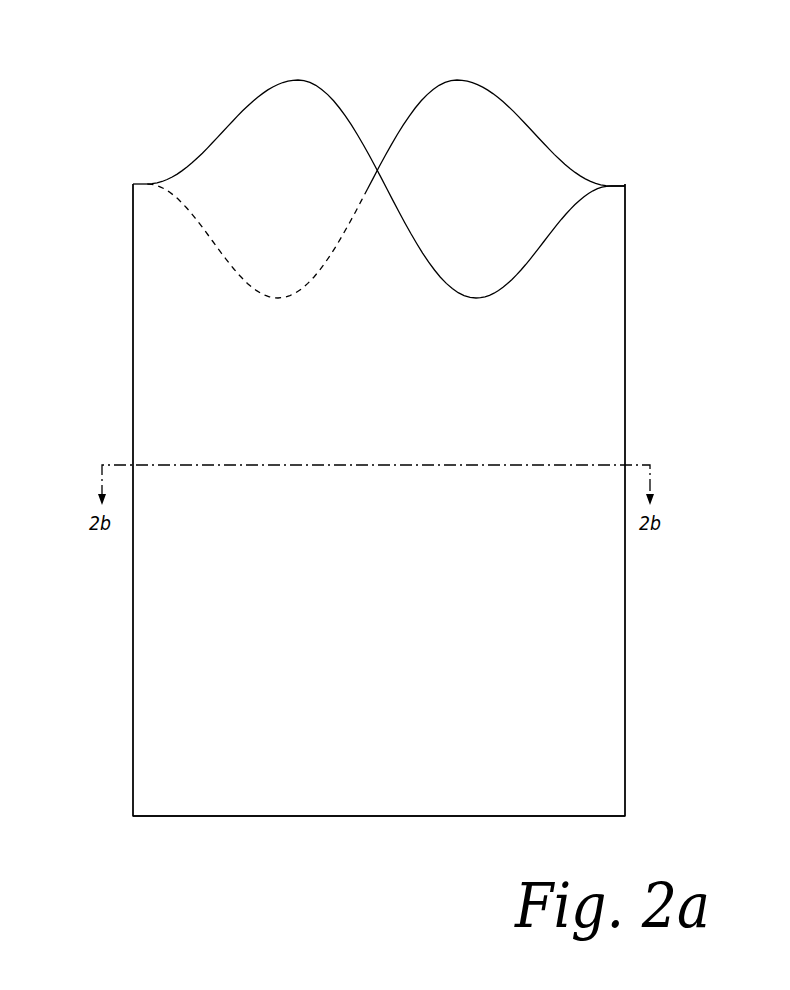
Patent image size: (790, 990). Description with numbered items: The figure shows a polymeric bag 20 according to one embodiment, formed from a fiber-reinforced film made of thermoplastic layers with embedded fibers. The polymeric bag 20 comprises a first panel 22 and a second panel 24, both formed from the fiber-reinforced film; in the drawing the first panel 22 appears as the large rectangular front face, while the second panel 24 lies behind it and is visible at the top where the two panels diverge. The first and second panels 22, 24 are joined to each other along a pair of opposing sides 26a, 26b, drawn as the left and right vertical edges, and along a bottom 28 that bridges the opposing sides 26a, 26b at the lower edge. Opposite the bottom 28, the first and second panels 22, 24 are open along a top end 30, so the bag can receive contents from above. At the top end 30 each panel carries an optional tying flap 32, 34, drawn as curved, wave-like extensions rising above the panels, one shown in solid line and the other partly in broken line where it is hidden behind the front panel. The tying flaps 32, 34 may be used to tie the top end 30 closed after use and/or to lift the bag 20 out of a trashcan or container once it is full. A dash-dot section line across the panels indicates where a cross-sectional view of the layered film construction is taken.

The polymeric bag 20 is at (617, 72).
The first panel 22 is at (384, 621).
The second panel 24 is at (372, 149).
The opposing side 26a is at (133, 714).
The opposing side 26b is at (625, 668).
The bottom 28 is at (303, 817).
The top end 30 is at (148, 183).
The tying flap 32 is at (236, 115).
The tying flap 34 is at (448, 80).